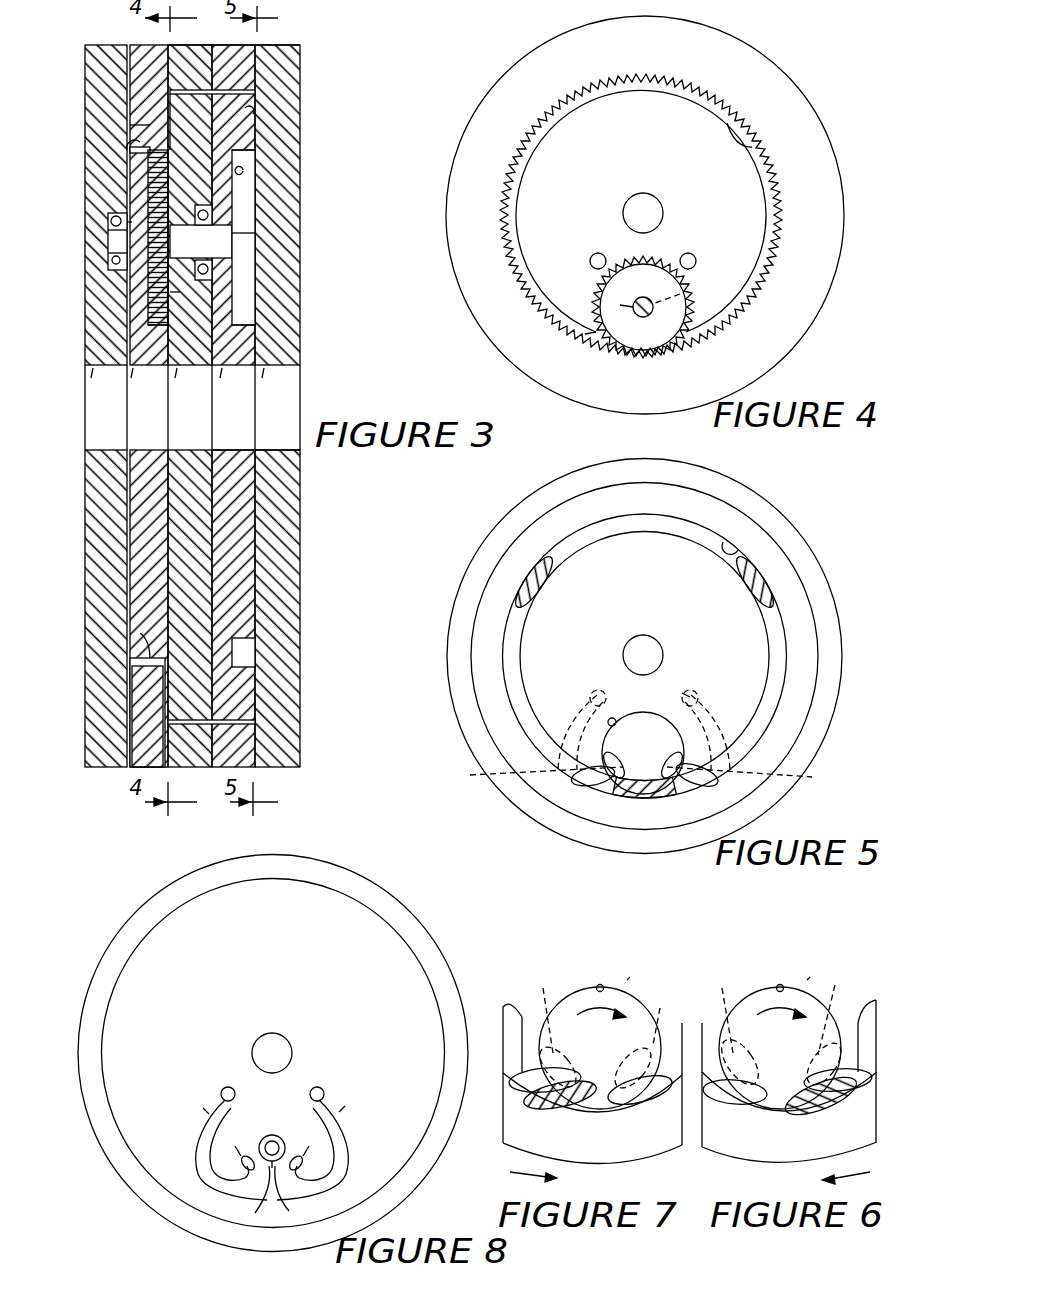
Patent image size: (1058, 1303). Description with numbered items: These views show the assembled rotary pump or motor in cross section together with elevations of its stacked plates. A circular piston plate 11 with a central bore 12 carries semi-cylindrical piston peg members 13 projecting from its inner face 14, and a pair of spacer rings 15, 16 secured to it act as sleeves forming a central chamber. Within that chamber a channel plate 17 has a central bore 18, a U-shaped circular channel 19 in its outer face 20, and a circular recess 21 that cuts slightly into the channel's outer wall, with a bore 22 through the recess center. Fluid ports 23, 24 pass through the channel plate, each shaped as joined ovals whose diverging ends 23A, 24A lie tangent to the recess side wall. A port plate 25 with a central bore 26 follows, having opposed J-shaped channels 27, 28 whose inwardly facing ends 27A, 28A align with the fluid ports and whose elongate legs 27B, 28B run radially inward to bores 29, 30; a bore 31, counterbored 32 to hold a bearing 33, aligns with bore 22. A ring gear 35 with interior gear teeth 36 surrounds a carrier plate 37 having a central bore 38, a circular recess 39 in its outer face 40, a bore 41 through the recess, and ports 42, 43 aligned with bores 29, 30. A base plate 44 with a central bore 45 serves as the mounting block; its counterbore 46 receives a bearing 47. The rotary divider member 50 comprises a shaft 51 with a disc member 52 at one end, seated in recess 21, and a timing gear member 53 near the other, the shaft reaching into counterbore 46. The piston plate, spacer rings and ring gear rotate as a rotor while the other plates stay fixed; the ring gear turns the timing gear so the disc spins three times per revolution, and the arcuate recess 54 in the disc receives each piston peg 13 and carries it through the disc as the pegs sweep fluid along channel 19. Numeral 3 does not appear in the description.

In FIG. 3, the bearing 3 is at (178, 218).
In FIG. 3, the piston plate 11 is at (300, 63).
In FIG. 3, the central bore 12 is at (277, 406).
In FIG. 3, the piston peg members 13 is at (243, 172).
In FIG. 5, the piston peg members 13 is at (540, 590).
In FIG. 7, the piston peg members 13 is at (560, 1107).
In FIG. 6, the piston peg members 13 is at (795, 1108).
In FIG. 3, the inner face 14 is at (250, 100).
In FIG. 3, the spacer ring 15 is at (238, 58).
In FIG. 5, the spacer ring 15 is at (490, 550).
In FIG. 3, the spacer ring 16 is at (198, 62).
In FIG. 8, the spacer ring 16 is at (362, 893).
In FIG. 3, the channel plate 17 is at (242, 512).
In FIG. 5, the channel plate 17 is at (743, 533).
In FIG. 7, the channel plate 17 is at (605, 1150).
In FIG. 6, the channel plate 17 is at (770, 1148).
In FIG. 3, the central bore 18 is at (233, 406).
In FIG. 5, the central bore 18 is at (657, 647).
In FIG. 3, the channel 19 is at (243, 157).
In FIG. 5, the channel 19 is at (740, 550).
In FIG. 7, the channel 19 is at (516, 1027).
In FIG. 6, the channel 19 is at (860, 1027).
In FIG. 3, the outer face 20 is at (257, 612).
In FIG. 3, the circular recess 21 is at (243, 322).
In FIG. 5, the circular recess 21 is at (615, 719).
In FIG. 7, the circular recess 21 is at (600, 984).
In FIG. 6, the circular recess 21 is at (780, 984).
In FIG. 3, the bore 22 is at (252, 233).
In FIG. 5, the fluid port 23 is at (673, 785).
In FIG. 7, the fluid port 23 is at (640, 1107).
In FIG. 6, the fluid port 23 is at (838, 1105).
In FIG. 5, the diverging end of fluid port 23A is at (765, 779).
In FIG. 7, the diverging end of fluid port 23A is at (672, 1014).
In FIG. 6, the diverging end of fluid port 23A is at (843, 1009).
In FIG. 5, the fluid port 24 is at (607, 783).
In FIG. 7, the fluid port 24 is at (545, 1104).
In FIG. 6, the fluid port 24 is at (735, 1110).
In FIG. 5, the diverging end of fluid port 24A is at (519, 779).
In FIG. 7, the diverging end of fluid port 24A is at (546, 1008).
In FIG. 6, the diverging end of fluid port 24A is at (719, 1008).
In FIG. 3, the port plate 25 is at (188, 564).
In FIG. 8, the port plate 25 is at (378, 943).
In FIG. 3, the central bore 26 is at (190, 406).
In FIG. 8, the central bore 26 is at (285, 1040).
In FIG. 5, the J-shaped channel 27 is at (713, 712).
In FIG. 8, the J-shaped channel 27 is at (348, 1120).
In FIG. 8, the inwardly facing end of J-shaped channel 27A is at (302, 1135).
In FIG. 8, the elongate leg 27B is at (340, 1100).
In FIG. 5, the J-shaped channel 28 is at (582, 718).
In FIG. 8, the J-shaped channel 28 is at (190, 1118).
In FIG. 8, the inwardly facing end of J-shaped channel 28A is at (237, 1135).
In FIG. 8, the elongate leg 28B is at (198, 1102).
In FIG. 5, the bore 29 is at (700, 697).
In FIG. 8, the bore 29 is at (316, 1084).
In FIG. 5, the bore 30 is at (594, 691).
In FIG. 8, the bore 30 is at (223, 1081).
In FIG. 8, the bore 31 is at (267, 1135).
In FIG. 3, the counterbore 32 is at (188, 297).
In FIG. 8, the counterbore 32 is at (257, 1182).
In FIG. 3, the bearing 33 is at (206, 272).
In FIG. 3, the ring gear 35 is at (145, 125).
In FIG. 4, the ring gear 35 is at (767, 100).
In FIG. 3, the gear teeth 36 is at (142, 143).
In FIG. 4, the gear teeth 36 is at (747, 150).
In FIG. 3, the carrier plate 37 is at (148, 608).
In FIG. 4, the carrier plate 37 is at (628, 146).
In FIG. 3, the central bore 38 is at (149, 406).
In FIG. 4, the central bore 38 is at (660, 207).
In FIG. 3, the circular recess 39 is at (153, 328).
In FIG. 4, the circular recess 39 is at (661, 263).
In FIG. 4, the outer face 40 is at (550, 198).
In FIG. 3, the bore 41 is at (130, 222).
In FIG. 4, the bore 41 is at (680, 294).
In FIG. 4, the port 42 is at (696, 262).
In FIG. 4, the port 43 is at (590, 263).
In FIG. 3, the base plate 44 is at (86, 56).
In FIG. 3, the central bore 45 is at (106, 567).
In FIG. 3, the counterbore 46 is at (110, 267).
In FIG. 3, the bearing 47 is at (110, 223).
In FIG. 3, the rotary divider member 50 is at (252, 255).
In FIG. 4, the rotary divider member 50 is at (590, 333).
In FIG. 5, the rotary divider member 50 is at (673, 685).
In FIG. 7, the rotary divider member 50 is at (627, 980).
In FIG. 6, the rotary divider member 50 is at (807, 980).
In FIG. 3, the shaft 51 is at (186, 251).
In FIG. 4, the shaft 51 is at (638, 318).
In FIG. 3, the disc member 52 is at (247, 245).
In FIG. 5, the disc member 52 is at (629, 741).
In FIG. 7, the disc member 52 is at (585, 1039).
In FIG. 6, the disc member 52 is at (765, 1039).
In FIG. 3, the timing gear member 53 is at (157, 302).
In FIG. 4, the timing gear member 53 is at (620, 305).
In FIG. 5, the arcuate recess 54 is at (629, 766).
In FIG. 7, the arcuate recess 54 is at (585, 1060).
In FIG. 6, the arcuate recess 54 is at (765, 1060).